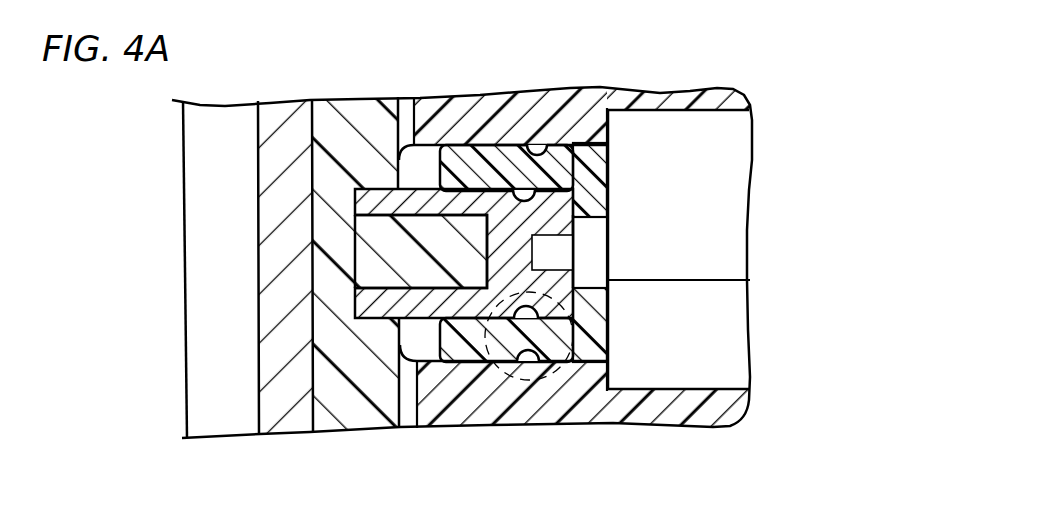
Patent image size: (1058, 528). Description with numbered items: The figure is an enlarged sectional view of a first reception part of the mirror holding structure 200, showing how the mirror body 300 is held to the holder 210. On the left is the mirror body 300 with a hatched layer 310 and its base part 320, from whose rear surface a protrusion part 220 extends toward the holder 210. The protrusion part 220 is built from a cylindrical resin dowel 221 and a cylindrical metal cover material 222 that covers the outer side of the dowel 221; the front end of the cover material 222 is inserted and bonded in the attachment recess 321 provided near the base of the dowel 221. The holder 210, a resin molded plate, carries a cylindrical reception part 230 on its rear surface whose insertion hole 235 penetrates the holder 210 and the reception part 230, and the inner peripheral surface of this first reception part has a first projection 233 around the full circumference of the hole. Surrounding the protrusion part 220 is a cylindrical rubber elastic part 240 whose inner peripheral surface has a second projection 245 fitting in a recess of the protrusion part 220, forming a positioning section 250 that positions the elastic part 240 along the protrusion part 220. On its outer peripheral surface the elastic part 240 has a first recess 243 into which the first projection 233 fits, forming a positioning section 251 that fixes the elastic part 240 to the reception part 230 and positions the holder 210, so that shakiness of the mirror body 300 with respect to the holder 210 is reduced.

The mirror holding structure 200 is at (737, 421).
The holder 210 is at (718, 340).
The protrusion part 220 is at (423, 305).
The dowel 221 is at (423, 227).
The cover material 222 is at (452, 200).
The reception part 230 is at (613, 416).
The first projection 233 is at (533, 352).
The insertion hole 235 is at (748, 262).
The elastic part 240 is at (572, 168).
The first recess 243 is at (535, 148).
The second projection 245 is at (530, 195).
The positioning section 250 is at (537, 307).
The positioning section 251 is at (517, 362).
The mirror body 300 is at (210, 428).
The outer wall 310 is at (272, 423).
The base part 320 is at (350, 420).
The attachment recess 321 is at (371, 187).